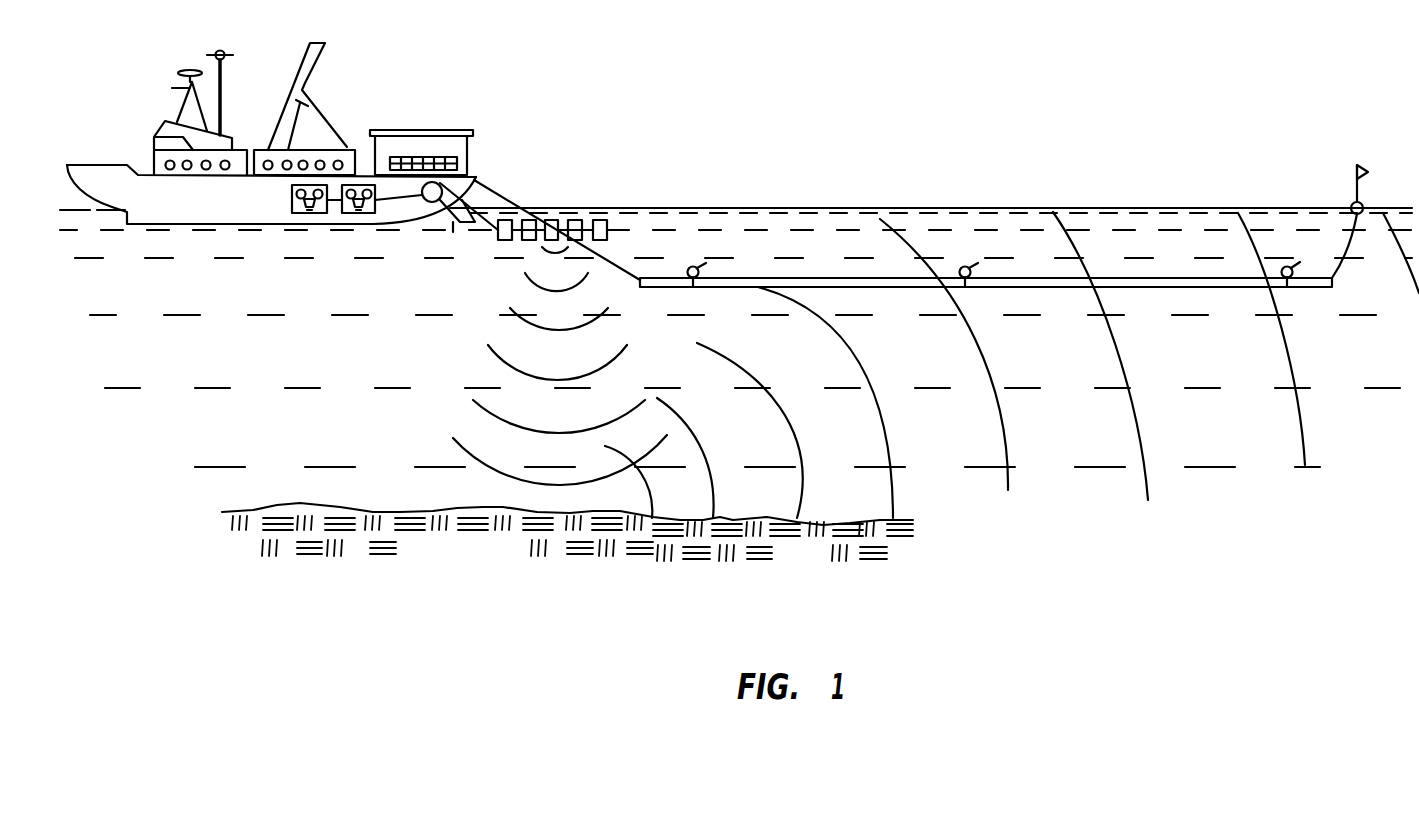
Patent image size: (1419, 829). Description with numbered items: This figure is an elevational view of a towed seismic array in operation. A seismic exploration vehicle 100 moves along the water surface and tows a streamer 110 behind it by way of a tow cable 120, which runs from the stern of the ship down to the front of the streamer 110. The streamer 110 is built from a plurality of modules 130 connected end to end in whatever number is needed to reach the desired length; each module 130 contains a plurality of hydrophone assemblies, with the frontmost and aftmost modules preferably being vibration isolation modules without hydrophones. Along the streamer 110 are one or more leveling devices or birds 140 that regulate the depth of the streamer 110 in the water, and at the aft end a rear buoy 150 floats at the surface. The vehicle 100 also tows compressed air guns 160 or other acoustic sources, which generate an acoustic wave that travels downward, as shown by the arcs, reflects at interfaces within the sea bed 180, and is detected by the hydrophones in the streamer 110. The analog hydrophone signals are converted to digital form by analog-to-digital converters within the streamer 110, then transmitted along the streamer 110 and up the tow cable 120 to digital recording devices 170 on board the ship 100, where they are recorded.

The seismic exploration vehicle 100 is at (167, 210).
The streamer 110 is at (1151, 292).
The tow cable 120 is at (612, 259).
The module 130 is at (808, 278).
The leveling device 140 is at (694, 267).
The rear buoy 150 is at (1350, 203).
The compressed air gun 160 is at (576, 220).
The digital recording device 170 is at (313, 192).
The sea bed 180 is at (452, 512).